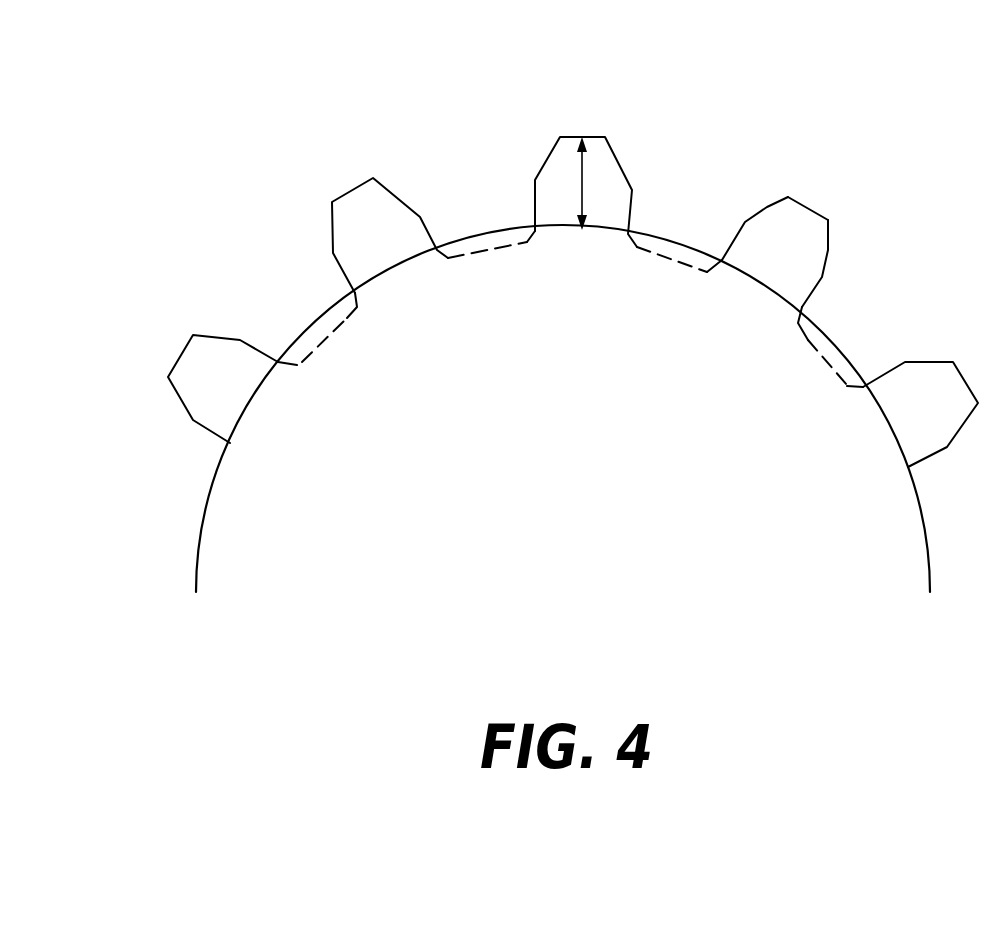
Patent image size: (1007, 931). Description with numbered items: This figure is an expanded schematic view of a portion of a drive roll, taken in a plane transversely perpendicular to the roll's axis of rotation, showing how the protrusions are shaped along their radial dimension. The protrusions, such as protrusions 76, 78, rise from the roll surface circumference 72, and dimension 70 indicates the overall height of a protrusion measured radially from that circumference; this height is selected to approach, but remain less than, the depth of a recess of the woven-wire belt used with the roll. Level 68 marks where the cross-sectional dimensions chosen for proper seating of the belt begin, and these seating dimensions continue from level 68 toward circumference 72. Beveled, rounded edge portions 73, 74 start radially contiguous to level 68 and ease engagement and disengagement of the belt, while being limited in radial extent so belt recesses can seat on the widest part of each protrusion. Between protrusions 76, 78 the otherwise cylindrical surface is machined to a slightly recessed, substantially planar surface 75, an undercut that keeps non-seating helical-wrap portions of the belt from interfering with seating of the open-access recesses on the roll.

The level of proper-seating cross-sectional dimensions 68 is at (872, 340).
The overall height dimension 70 is at (582, 180).
The roll surface circumference 72 is at (485, 235).
The beveled edge portion 73 is at (767, 207).
The beveled edge portion 74 is at (832, 238).
The slightly-recessed substantially-planar surface 75 is at (650, 250).
The protrusion 76 is at (605, 137).
The protrusion 78 is at (813, 203).